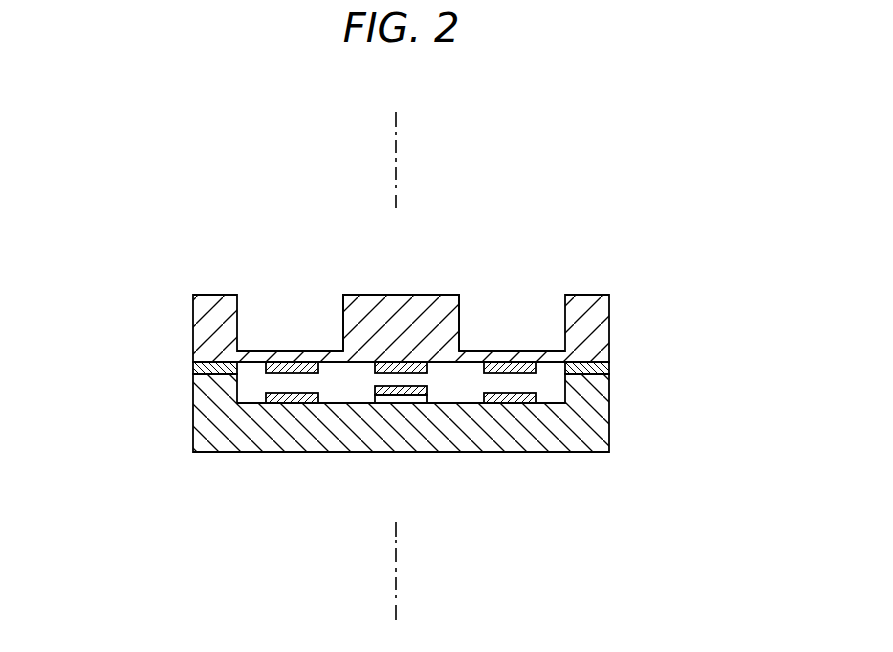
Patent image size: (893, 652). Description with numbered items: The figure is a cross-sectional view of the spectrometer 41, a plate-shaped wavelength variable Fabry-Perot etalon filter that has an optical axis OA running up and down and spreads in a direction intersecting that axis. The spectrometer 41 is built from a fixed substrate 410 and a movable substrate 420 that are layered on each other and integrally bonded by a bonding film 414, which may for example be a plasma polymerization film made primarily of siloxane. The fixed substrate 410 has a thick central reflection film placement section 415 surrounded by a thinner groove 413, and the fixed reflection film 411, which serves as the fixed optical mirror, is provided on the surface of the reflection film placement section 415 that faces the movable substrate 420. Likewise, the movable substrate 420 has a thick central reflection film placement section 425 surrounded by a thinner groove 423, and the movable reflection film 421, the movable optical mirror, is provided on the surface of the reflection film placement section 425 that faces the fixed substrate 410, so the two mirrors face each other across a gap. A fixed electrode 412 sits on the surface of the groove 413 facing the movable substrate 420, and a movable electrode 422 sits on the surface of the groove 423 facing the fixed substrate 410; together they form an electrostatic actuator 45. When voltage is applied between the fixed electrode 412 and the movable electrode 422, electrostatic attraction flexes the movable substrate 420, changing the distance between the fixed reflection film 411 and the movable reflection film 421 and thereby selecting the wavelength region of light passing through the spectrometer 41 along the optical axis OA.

The spectrometer 41 is at (612, 218).
The fixed substrate 410 is at (207, 421).
The movable substrate 420 is at (207, 330).
The reflection film placement section 425 is at (377, 318).
The bonding film 414 is at (610, 365).
The reflection film placement section 415 is at (400, 403).
The fixed reflection film 411 is at (408, 395).
The movable reflection film 421 is at (408, 363).
The groove 413 is at (343, 404).
The groove 423 is at (292, 350).
The fixed electrode 412 is at (512, 400).
The movable electrode 422 is at (502, 367).
The electrostatic actuator 45 is at (528, 381).
The optical axis OA is at (398, 349).